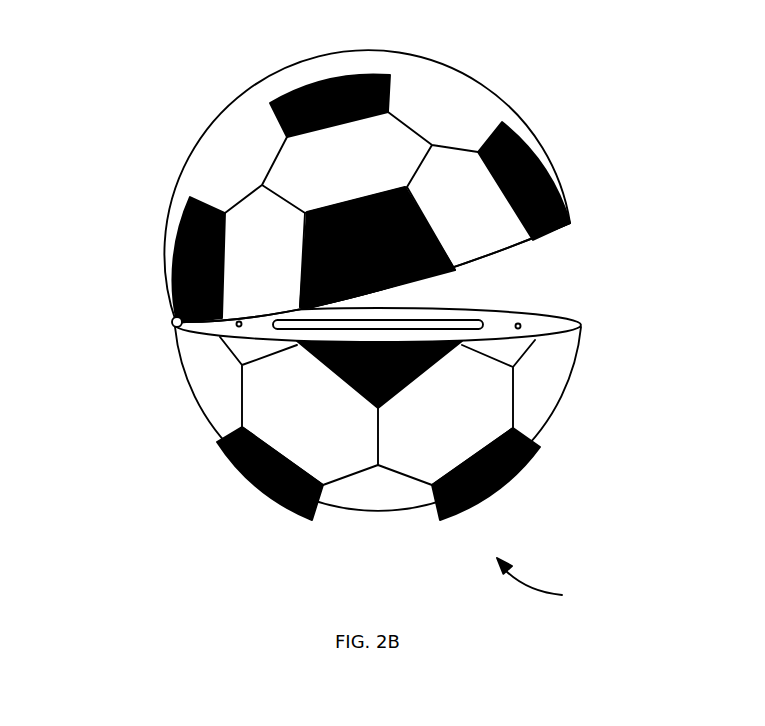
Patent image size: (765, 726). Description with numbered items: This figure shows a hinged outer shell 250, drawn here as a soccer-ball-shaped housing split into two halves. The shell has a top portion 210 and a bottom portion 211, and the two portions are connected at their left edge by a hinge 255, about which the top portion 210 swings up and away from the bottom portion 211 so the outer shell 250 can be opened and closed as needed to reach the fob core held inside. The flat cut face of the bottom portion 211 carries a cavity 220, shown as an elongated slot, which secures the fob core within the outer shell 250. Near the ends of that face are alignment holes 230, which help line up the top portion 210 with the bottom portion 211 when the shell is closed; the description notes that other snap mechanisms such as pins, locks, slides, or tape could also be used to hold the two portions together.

The top portion 210 is at (448, 107).
The bottom portion 211 is at (548, 388).
The cavity 220 is at (397, 325).
The alignment holes 230 is at (520, 325).
The hinged outer shell 250 is at (554, 582).
The hinge 255 is at (173, 320).